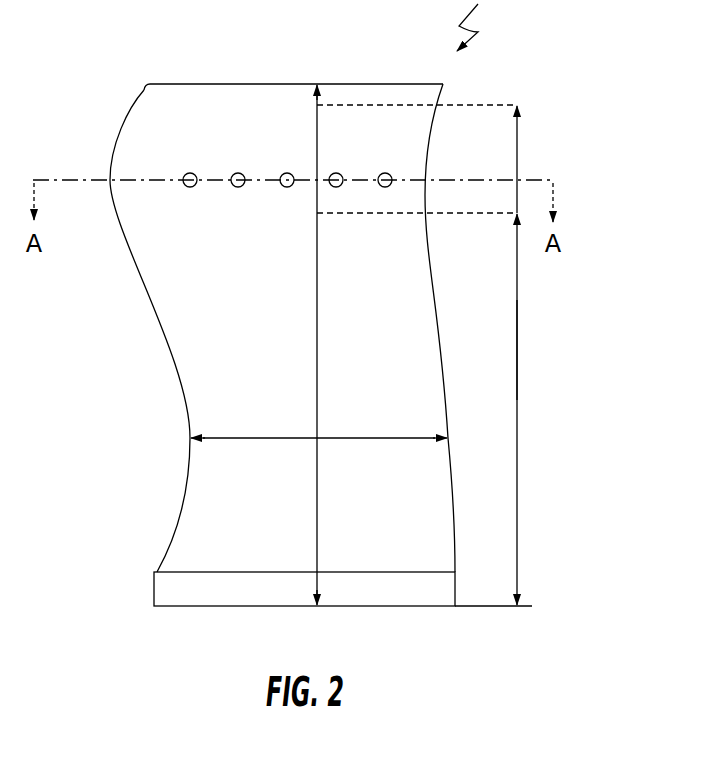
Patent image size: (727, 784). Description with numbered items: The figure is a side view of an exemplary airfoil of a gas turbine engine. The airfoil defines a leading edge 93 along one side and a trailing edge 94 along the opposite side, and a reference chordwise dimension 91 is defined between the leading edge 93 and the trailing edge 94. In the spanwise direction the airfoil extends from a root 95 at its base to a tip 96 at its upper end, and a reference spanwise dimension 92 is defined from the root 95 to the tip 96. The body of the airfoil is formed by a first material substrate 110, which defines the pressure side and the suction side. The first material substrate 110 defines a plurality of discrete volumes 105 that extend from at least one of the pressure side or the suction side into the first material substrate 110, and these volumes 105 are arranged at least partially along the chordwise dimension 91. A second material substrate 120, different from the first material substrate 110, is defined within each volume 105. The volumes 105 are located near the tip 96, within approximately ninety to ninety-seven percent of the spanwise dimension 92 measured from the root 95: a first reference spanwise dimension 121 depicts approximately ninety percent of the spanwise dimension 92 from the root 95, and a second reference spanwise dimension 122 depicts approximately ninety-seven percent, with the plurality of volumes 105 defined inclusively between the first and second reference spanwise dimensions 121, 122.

The tip 96 is at (290, 287).
The first material substrate 110 is at (203, 97).
The plurality of discrete volumes 105 is at (262, 179).
The second material substrate 120 is at (190, 188).
The reference spanwise dimension 92 is at (317, 368).
The reference chordwise dimension 91 is at (217, 436).
The leading edge 93 is at (148, 362).
The trailing edge 94 is at (445, 352).
The root 95 is at (165, 630).
The first reference spanwise dimension 121 is at (517, 407).
The second reference spanwise dimension 122 is at (517, 147).